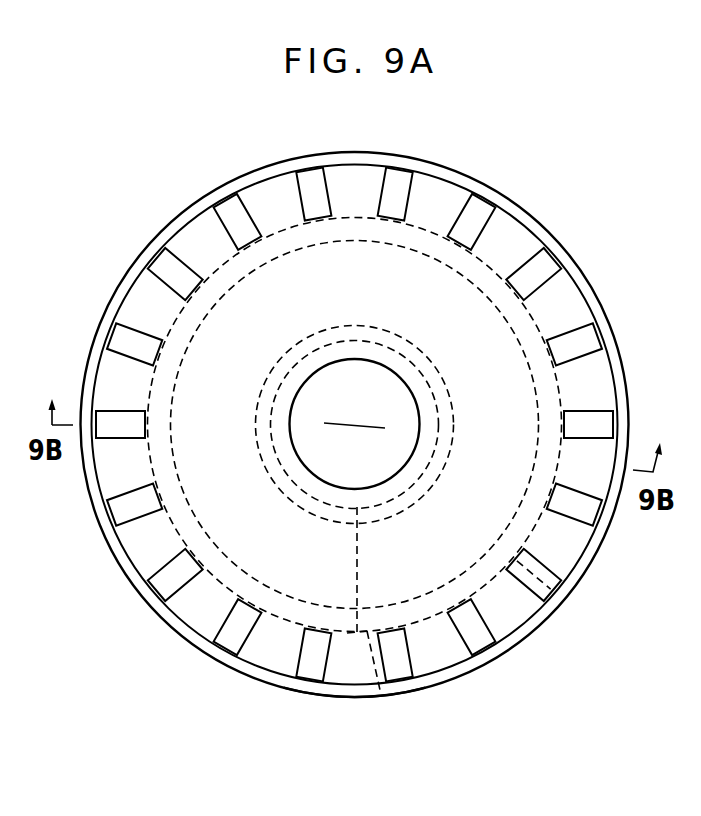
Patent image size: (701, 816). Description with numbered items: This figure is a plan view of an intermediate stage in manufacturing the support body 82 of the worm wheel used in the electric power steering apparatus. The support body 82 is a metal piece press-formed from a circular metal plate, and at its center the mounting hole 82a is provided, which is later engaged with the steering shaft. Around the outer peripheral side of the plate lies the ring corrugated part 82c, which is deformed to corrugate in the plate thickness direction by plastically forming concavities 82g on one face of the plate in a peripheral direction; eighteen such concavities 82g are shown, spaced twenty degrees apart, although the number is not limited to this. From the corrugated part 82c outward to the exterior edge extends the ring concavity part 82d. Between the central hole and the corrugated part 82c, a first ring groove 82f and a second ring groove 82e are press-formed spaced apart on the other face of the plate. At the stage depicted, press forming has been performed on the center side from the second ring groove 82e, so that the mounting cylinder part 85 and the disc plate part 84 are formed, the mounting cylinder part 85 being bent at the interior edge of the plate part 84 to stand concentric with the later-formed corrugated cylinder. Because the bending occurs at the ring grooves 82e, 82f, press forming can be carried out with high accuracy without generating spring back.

The support body 82 is at (389, 424).
The mounting hole 82a is at (412, 459).
The ring corrugated part 82c is at (193, 607).
The ring concavity part 82d is at (445, 677).
The second ring groove 82e is at (380, 690).
The first ring groove 82f is at (347, 633).
The concavities 82g is at (300, 662).
The disc plate part 84 is at (470, 563).
The mounting cylinder part 85 is at (570, 595).